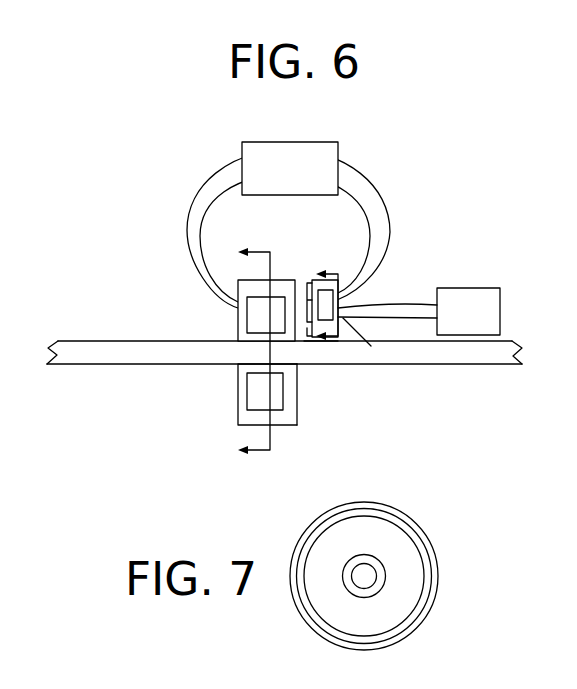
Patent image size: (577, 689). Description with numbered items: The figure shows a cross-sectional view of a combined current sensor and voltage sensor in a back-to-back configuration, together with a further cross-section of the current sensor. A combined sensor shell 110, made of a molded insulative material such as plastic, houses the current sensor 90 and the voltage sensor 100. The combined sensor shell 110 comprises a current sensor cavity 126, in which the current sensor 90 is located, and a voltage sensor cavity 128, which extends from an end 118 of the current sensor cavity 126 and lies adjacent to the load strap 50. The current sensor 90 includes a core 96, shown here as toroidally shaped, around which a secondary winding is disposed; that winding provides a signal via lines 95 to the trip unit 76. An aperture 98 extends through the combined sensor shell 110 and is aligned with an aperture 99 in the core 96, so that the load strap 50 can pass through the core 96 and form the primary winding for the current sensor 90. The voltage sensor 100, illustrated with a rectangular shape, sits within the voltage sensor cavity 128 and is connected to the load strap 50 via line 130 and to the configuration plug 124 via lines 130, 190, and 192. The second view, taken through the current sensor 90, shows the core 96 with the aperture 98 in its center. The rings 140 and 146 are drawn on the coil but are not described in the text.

In FIG. 6, the load strap 50 is at (95, 353).
In FIG. 6, the trip unit 76 is at (276, 153).
In FIG. 6, the current sensor 90 is at (238, 293).
In FIG. 7, the current sensor 90 is at (421, 532).
In FIG. 6, the lines 95 is at (218, 173).
In FIG. 6, the core 96 is at (253, 398).
In FIG. 7, the core 96 is at (397, 567).
In FIG. 6, the aperture 98 is at (235, 367).
In FIG. 7, the aperture 98 is at (365, 578).
In FIG. 6, the aperture 99 is at (237, 334).
In FIG. 6, the voltage sensor 100 is at (305, 280).
In FIG. 6, the combined sensor shell 110 is at (470, 208).
In FIG. 6, the end 118 is at (302, 297).
In FIG. 6, the configuration plug 124 is at (488, 288).
In FIG. 6, the current sensor cavity 126 is at (287, 405).
In FIG. 6, the voltage sensor cavity 128 is at (305, 343).
In FIG. 6, the line 130 is at (368, 332).
In FIG. 6, the outer ring 140 is at (378, 181).
In FIG. 6, the inner ring 146 is at (372, 210).
In FIG. 6, the line 190 is at (416, 305).
In FIG. 6, the line 192 is at (397, 316).